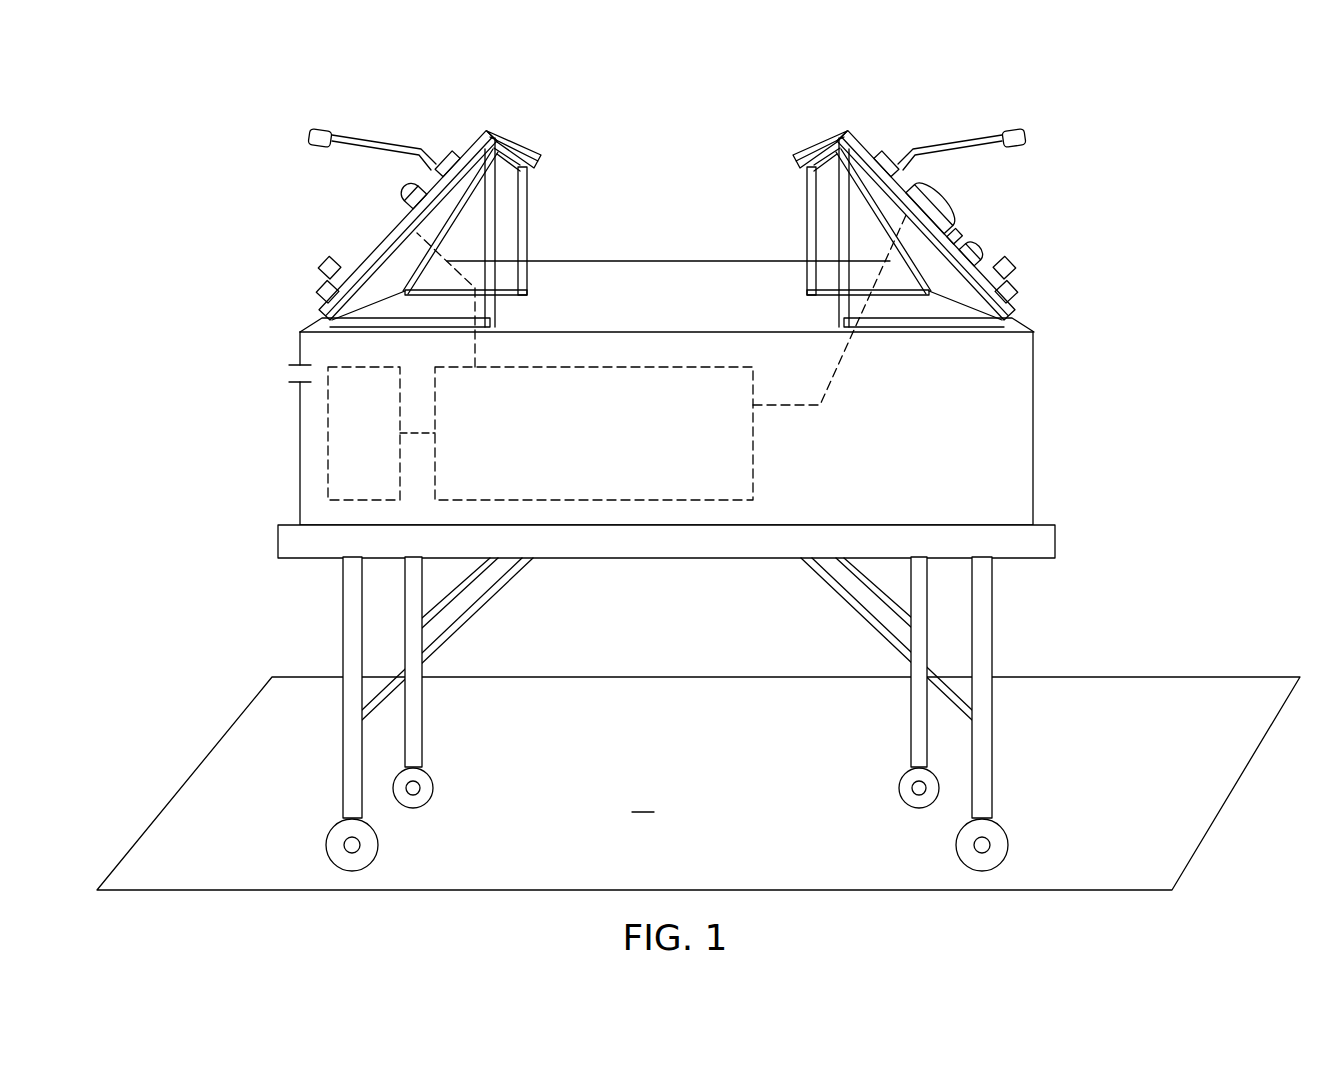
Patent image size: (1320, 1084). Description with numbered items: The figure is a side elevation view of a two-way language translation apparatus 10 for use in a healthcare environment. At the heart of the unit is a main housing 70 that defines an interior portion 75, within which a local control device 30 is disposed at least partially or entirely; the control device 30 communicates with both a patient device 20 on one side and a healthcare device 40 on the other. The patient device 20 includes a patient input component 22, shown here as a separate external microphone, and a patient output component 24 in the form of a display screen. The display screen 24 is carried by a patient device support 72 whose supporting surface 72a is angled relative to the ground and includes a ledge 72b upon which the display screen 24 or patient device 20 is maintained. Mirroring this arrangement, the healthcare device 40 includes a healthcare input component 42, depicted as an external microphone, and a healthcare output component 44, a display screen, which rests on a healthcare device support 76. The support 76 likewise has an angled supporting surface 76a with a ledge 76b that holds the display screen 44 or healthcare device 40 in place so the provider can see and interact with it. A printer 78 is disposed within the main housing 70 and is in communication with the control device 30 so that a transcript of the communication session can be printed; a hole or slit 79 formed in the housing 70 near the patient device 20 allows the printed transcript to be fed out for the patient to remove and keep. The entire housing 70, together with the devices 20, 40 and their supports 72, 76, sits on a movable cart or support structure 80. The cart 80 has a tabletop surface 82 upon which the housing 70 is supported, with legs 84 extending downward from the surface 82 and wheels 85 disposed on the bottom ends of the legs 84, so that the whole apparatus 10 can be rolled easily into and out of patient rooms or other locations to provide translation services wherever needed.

The apparatus 10 is at (678, 80).
The patient device 20 is at (407, 112).
The patient input component 22 is at (322, 126).
The patient output component 24 is at (462, 152).
The local control device 30 is at (756, 447).
The healthcare device 40 is at (893, 103).
The healthcare input component 42 is at (1013, 127).
The healthcare output component 44 is at (940, 196).
The main housing 70 is at (1036, 397).
The patient device support 72 is at (545, 169).
The supporting surface 72a is at (312, 321).
The ledge 72b is at (318, 282).
The interior portion 75 is at (1000, 353).
The healthcare device support 76 is at (820, 158).
The supporting surface 76a is at (980, 254).
The ledge 76b is at (966, 230).
The printer 78 is at (328, 483).
The hole or slit 79 is at (286, 376).
The cart or support structure 80 is at (1092, 512).
The tabletop surface 82 is at (1049, 523).
The legs 84 is at (343, 635).
The wheels 85 is at (325, 848).